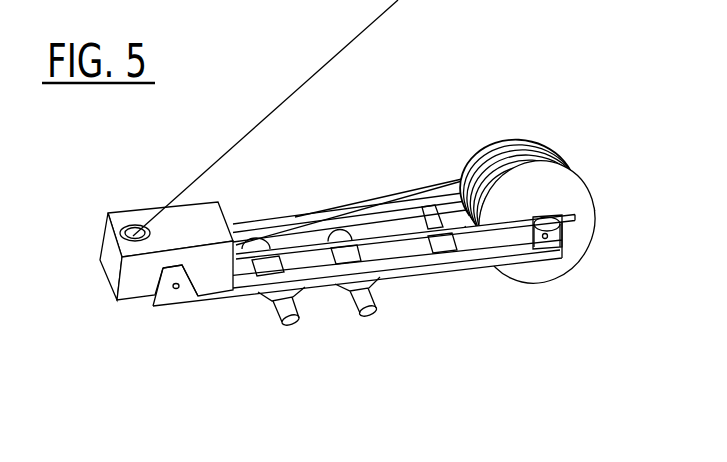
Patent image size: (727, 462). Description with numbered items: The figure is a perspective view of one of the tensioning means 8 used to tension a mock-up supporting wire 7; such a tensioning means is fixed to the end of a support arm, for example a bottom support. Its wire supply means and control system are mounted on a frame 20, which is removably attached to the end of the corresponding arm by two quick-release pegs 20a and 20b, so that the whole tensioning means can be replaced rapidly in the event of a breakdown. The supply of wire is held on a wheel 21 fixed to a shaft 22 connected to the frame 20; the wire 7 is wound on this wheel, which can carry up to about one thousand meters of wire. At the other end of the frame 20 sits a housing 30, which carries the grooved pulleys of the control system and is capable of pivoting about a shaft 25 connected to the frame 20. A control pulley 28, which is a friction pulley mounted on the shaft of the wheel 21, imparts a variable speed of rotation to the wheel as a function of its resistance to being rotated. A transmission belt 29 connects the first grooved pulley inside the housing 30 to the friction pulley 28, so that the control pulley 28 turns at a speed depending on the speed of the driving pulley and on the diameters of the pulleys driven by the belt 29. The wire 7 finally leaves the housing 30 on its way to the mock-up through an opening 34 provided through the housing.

The wire 7 is at (306, 74).
The tensioning means 8 is at (402, 216).
The frame 20 is at (304, 210).
The quick-release peg 20a is at (279, 324).
The quick-release peg 20b is at (352, 316).
The wheel 21 is at (580, 217).
The shaft 22 is at (547, 240).
The shaft 25 is at (176, 290).
The control pulley 28 is at (565, 230).
The transmission belt 29 is at (419, 228).
The housing 30 is at (213, 221).
The opening 34 is at (135, 222).